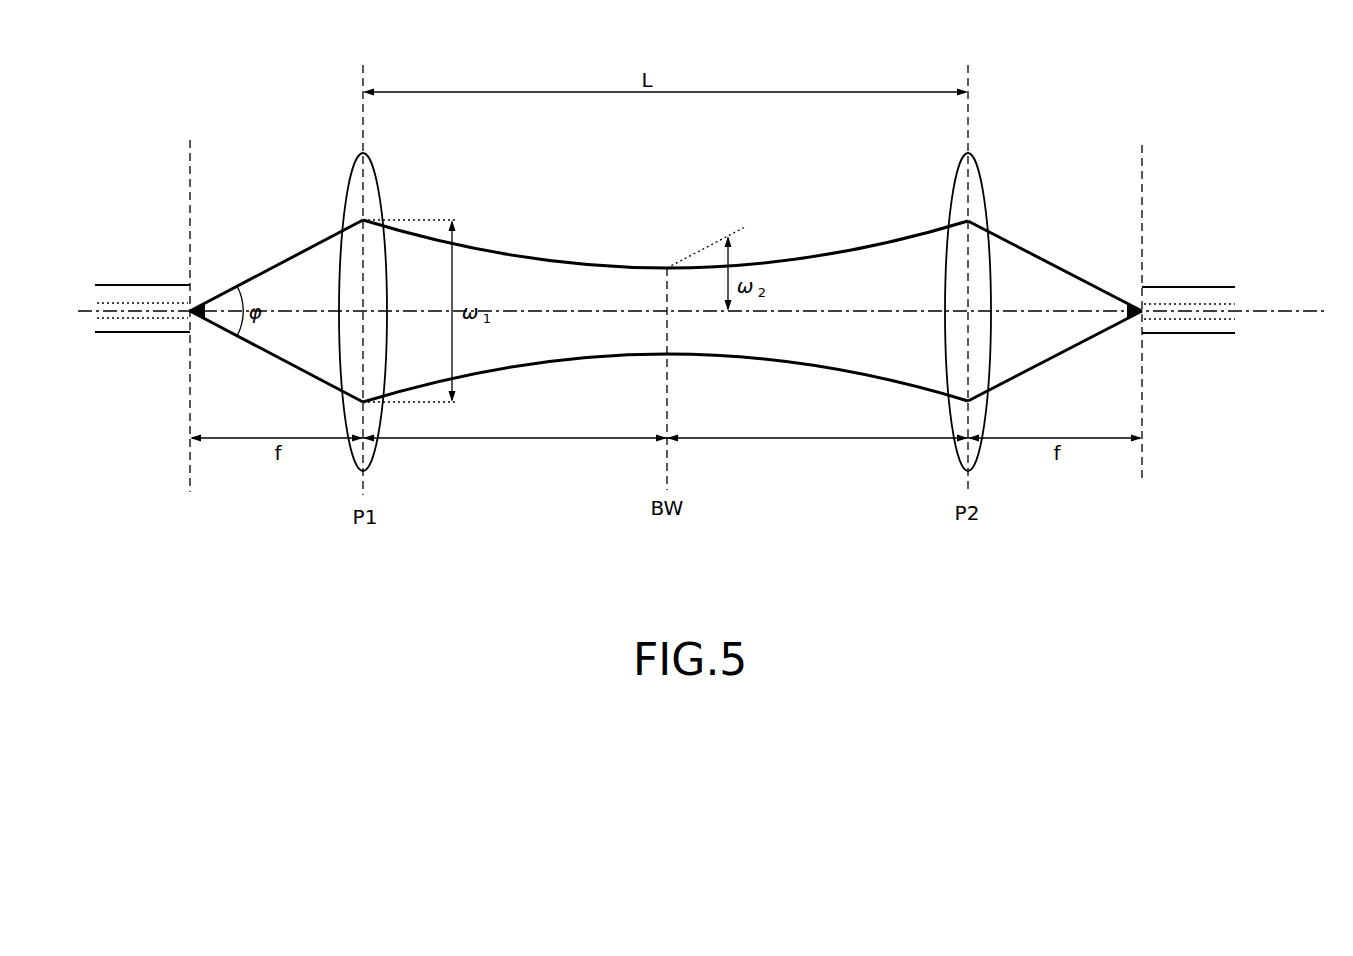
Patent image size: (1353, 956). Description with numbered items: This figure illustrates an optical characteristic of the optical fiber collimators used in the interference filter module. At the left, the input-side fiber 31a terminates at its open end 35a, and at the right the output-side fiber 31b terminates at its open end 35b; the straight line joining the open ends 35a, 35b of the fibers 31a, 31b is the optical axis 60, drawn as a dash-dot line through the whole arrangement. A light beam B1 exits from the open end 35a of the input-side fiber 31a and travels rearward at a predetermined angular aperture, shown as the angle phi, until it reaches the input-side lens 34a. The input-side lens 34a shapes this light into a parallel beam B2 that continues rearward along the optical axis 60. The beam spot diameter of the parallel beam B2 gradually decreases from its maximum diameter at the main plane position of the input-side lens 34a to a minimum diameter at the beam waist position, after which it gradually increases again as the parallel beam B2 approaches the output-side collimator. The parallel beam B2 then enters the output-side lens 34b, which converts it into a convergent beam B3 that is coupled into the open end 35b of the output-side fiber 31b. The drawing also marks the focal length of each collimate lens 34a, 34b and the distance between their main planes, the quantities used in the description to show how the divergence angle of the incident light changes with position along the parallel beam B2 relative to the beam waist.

The input-side fiber 31a is at (125, 328).
The output-side fiber 31b is at (1185, 292).
The input-side lens 34a is at (353, 447).
The output-side lens 34b is at (982, 202).
The open end of the input-side fiber 35a is at (213, 290).
The open end of the output-side fiber 35b is at (1127, 298).
The optical axis 60 is at (877, 307).
The light beam B1 is at (268, 372).
The parallel beam B2 is at (556, 372).
The convergent beam B3 is at (1055, 374).